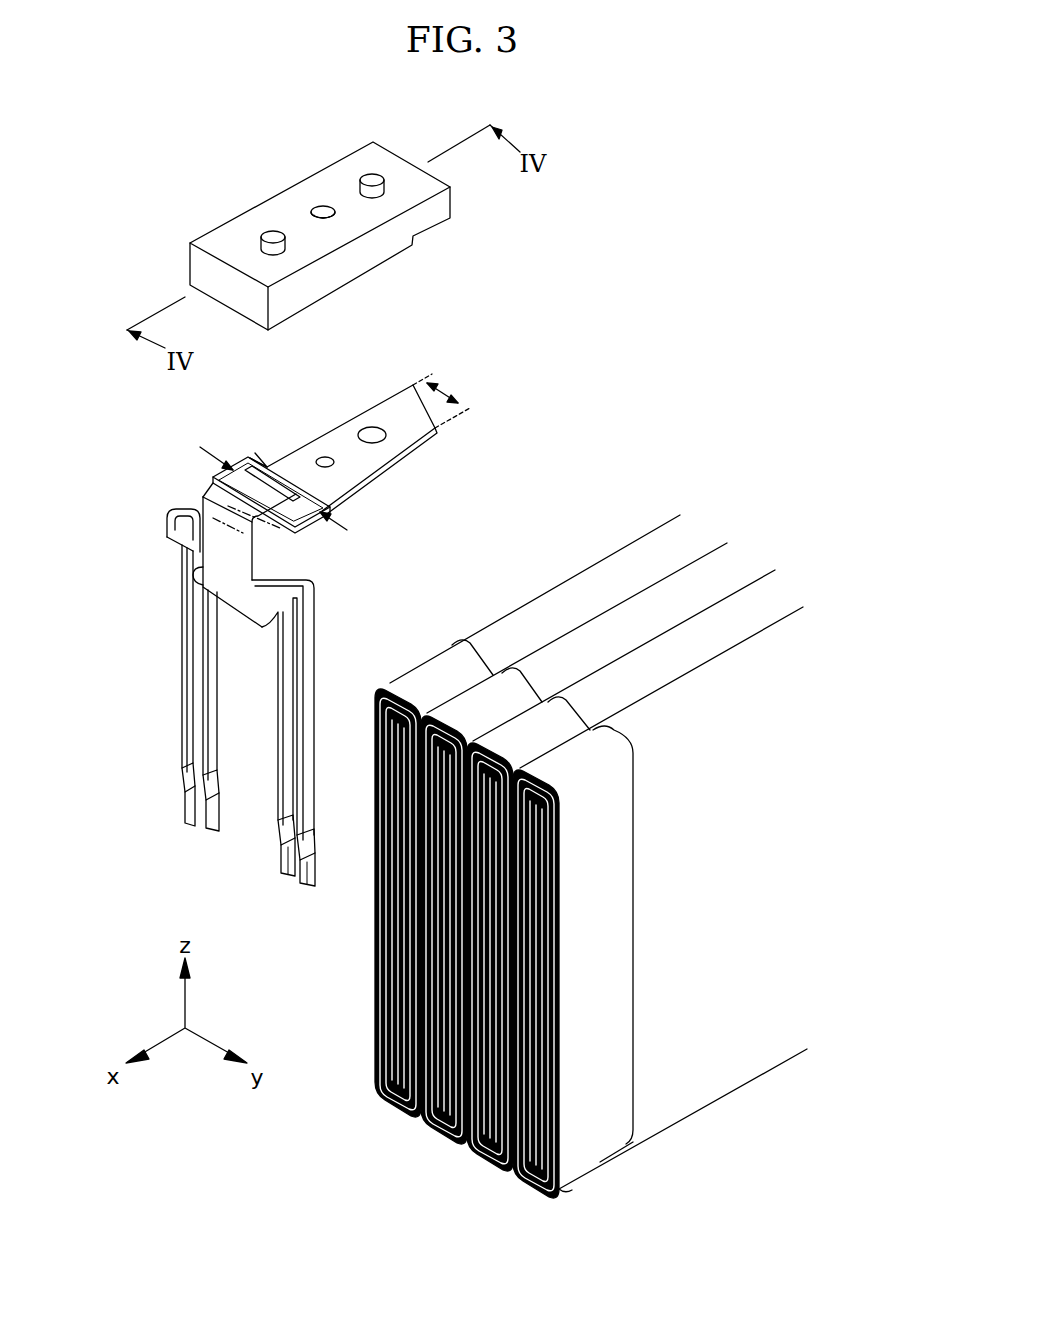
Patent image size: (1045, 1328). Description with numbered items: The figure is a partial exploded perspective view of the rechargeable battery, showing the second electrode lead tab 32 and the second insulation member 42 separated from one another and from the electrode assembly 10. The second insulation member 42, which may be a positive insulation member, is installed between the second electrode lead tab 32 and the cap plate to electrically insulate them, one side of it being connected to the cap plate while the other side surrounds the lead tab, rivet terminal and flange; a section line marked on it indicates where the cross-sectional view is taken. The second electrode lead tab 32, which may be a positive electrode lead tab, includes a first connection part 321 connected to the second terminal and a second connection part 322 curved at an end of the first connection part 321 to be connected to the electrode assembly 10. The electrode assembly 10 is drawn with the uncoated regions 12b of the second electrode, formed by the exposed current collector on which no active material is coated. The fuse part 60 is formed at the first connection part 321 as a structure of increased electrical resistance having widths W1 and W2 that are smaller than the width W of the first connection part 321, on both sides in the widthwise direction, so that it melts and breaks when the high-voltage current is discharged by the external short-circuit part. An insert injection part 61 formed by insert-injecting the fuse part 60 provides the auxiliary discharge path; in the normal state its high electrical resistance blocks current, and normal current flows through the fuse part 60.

The electrode assembly 10 is at (683, 1118).
The uncoated region 12b is at (597, 1160).
The second electrode lead tab 32 is at (243, 632).
The first connection part 321 is at (425, 438).
The second connection part 322 is at (188, 677).
The second insulation member 42 is at (200, 262).
The fuse part 60 is at (332, 495).
The insert injection part 61 is at (258, 455).
The width of the first connection part W is at (441, 399).
The fuse part width W1 is at (198, 446).
The fuse part width W2 is at (351, 533).